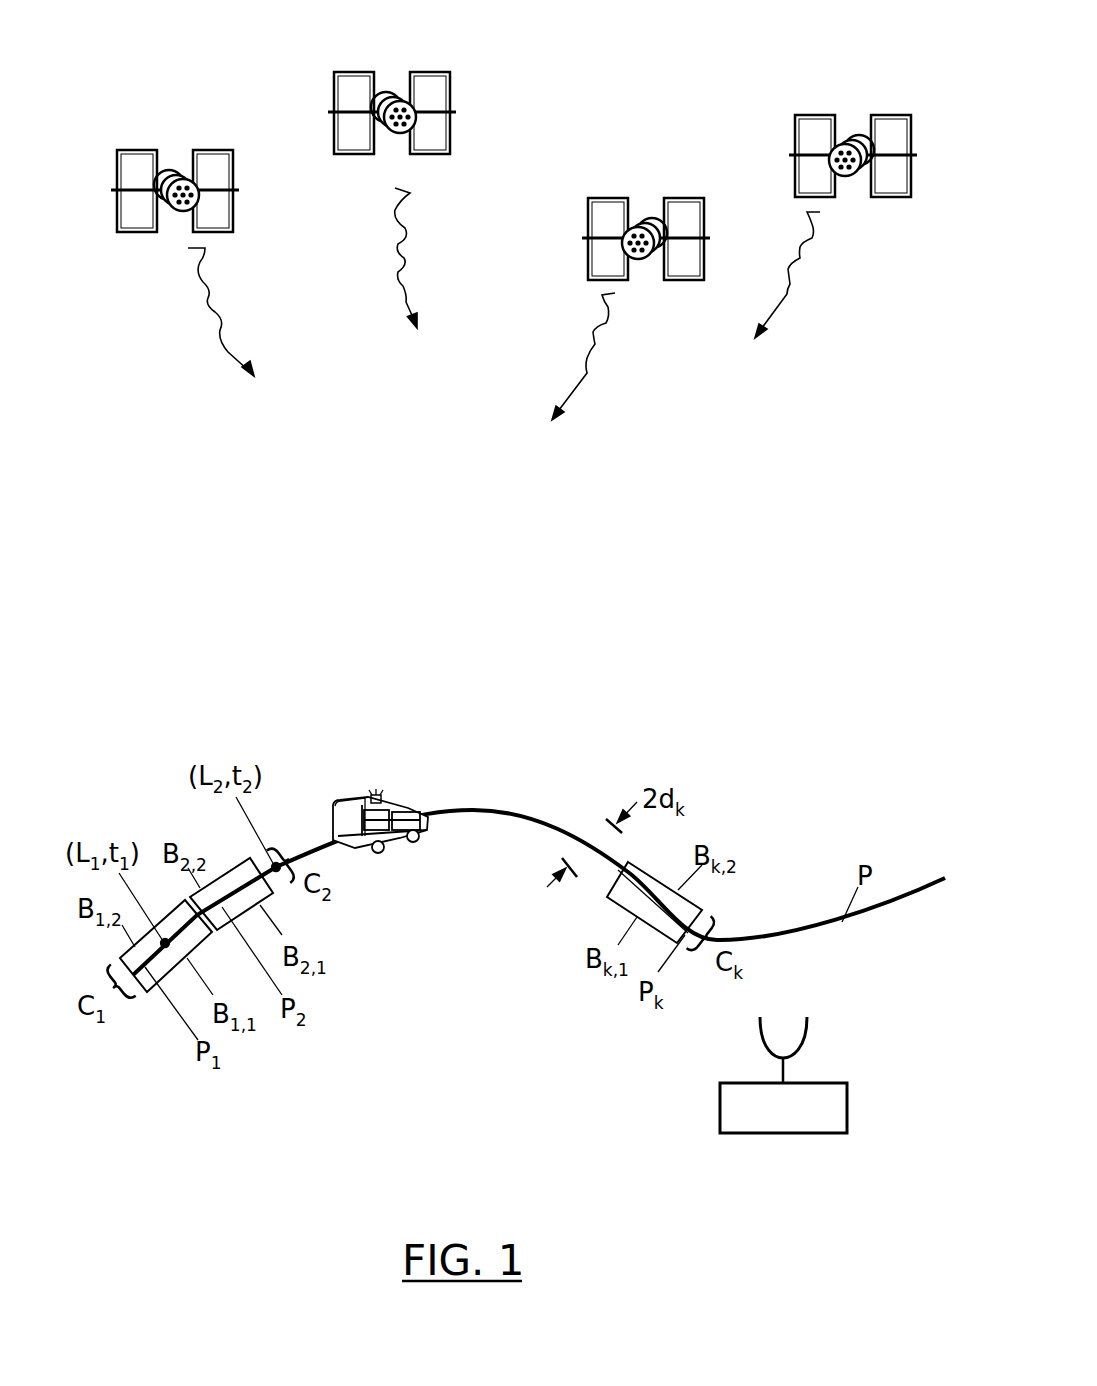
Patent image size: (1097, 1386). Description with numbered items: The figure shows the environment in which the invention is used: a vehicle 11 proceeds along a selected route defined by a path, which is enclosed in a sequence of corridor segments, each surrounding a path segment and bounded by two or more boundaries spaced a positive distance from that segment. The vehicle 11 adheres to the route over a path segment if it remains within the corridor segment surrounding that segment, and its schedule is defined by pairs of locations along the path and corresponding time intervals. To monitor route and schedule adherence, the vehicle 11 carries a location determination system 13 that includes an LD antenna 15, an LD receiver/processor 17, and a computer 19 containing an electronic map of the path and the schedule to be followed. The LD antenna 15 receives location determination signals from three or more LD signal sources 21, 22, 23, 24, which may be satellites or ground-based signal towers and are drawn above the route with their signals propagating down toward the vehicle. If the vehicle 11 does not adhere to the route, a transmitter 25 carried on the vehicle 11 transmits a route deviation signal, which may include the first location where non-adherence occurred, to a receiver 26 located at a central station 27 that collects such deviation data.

The vehicle 11 is at (400, 837).
The location determination (LD) system 13 is at (455, 761).
The LD antenna 15 is at (430, 761).
The LD receiver/processor 17 is at (430, 780).
The computer 19 is at (381, 800).
The LD signal source 21 is at (175, 175).
The LD signal source 22 is at (392, 97).
The LD signal source 23 is at (645, 222).
The LD signal source 24 is at (850, 138).
The transmitter 25 is at (355, 800).
The receiver 26 is at (790, 1062).
The central station 27 is at (833, 1108).